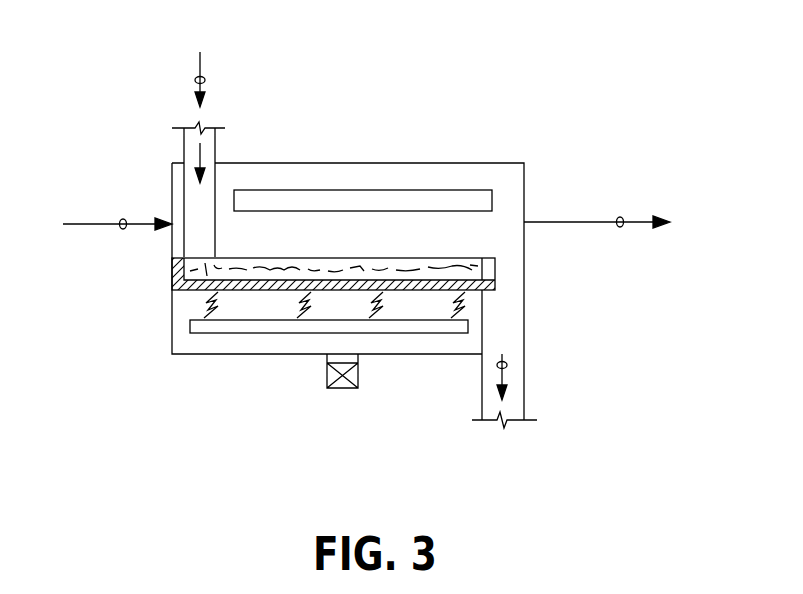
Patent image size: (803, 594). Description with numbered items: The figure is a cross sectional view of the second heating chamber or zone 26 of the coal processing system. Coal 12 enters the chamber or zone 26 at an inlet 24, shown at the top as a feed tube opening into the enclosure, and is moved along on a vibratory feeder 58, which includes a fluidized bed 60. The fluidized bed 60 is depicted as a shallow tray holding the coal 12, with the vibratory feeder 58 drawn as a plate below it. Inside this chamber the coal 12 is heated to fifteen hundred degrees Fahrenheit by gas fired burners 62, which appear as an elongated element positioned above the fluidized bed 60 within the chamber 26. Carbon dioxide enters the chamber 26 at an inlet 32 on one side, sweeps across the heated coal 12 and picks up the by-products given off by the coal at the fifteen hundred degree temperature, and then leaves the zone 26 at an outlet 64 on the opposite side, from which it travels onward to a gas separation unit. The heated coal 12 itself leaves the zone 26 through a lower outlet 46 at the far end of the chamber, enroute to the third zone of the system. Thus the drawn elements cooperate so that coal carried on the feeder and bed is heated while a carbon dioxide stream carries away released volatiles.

The coal 12 is at (315, 273).
The coal inlet 24 is at (205, 80).
The second heating chamber or zone 26 is at (538, 118).
The carbon dioxide inlet 32 is at (123, 219).
The coal outlet 46 is at (507, 365).
The vibratory feeder 58 is at (207, 328).
The fluidized bed 60 is at (487, 283).
The gas fired burners 62 is at (492, 200).
The carbon dioxide outlet 64 is at (620, 217).